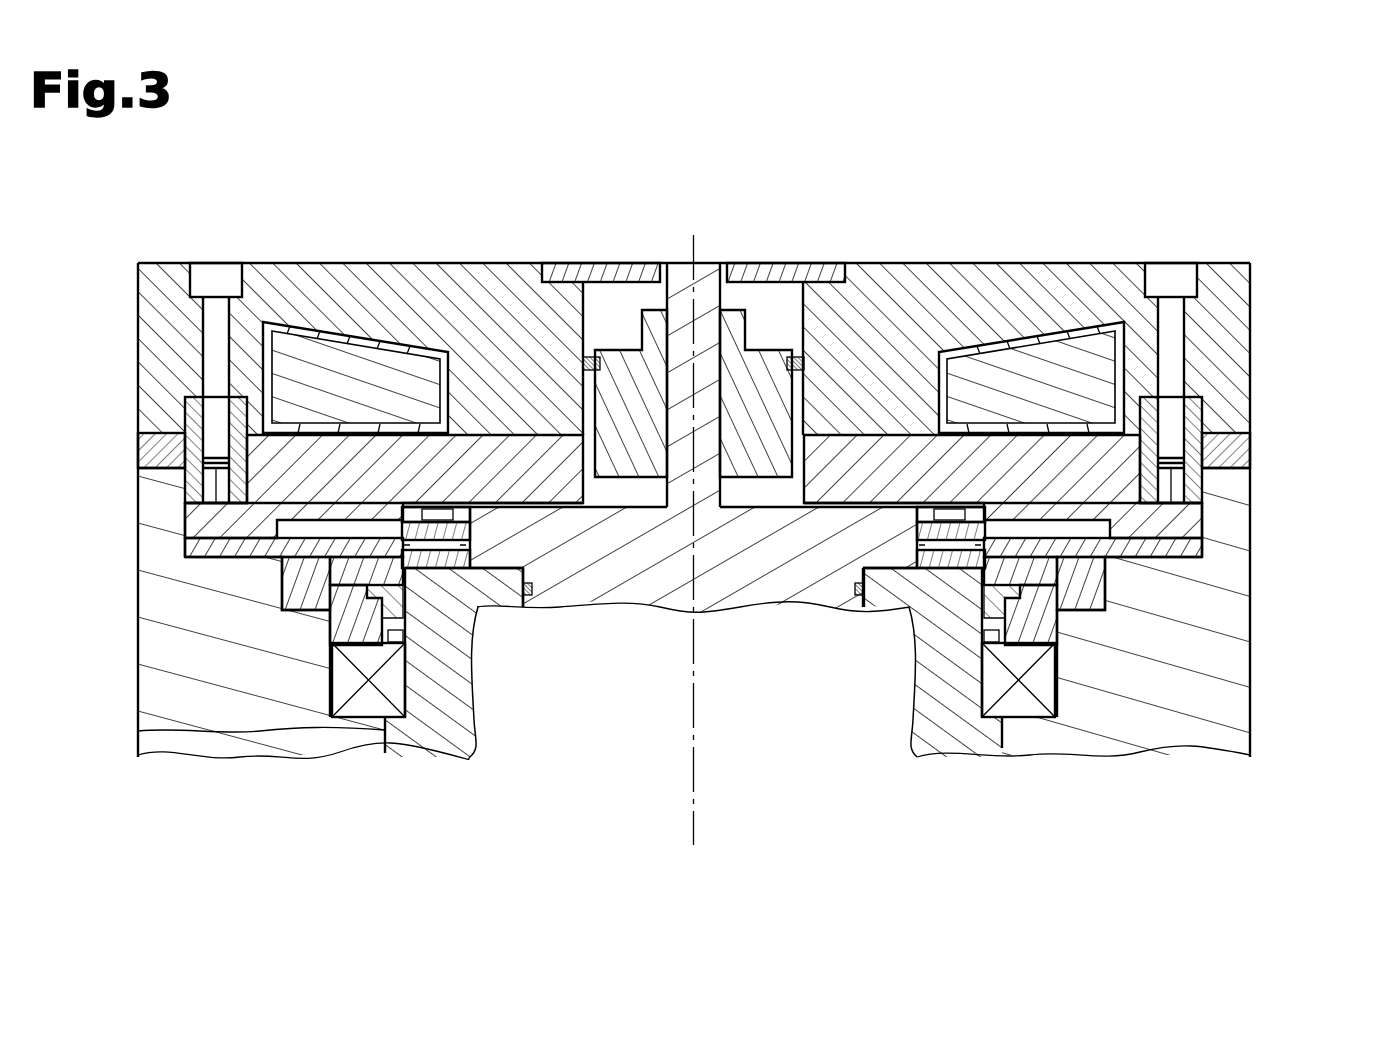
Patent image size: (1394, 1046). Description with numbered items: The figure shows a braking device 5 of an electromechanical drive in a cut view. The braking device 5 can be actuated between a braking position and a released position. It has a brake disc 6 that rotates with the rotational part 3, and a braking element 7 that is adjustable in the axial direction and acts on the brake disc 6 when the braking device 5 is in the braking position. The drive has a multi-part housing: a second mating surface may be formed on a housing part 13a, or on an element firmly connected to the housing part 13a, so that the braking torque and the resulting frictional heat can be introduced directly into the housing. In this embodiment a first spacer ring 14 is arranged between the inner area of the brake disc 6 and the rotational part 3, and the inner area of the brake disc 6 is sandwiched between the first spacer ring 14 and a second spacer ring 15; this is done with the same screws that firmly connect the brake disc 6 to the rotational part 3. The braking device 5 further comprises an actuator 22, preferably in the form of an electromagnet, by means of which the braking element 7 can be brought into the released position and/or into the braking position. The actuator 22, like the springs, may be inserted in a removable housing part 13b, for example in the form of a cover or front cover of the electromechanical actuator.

The rotational part 3 is at (423, 742).
The braking device 5 is at (1257, 437).
The brake disc 6 is at (1196, 547).
The braking element 7 is at (860, 457).
The housing part 13a is at (1252, 670).
The removable housing part 13b is at (139, 290).
The first spacer ring 14 is at (903, 563).
The second spacer ring 15 is at (918, 533).
The actuator 22 is at (372, 365).